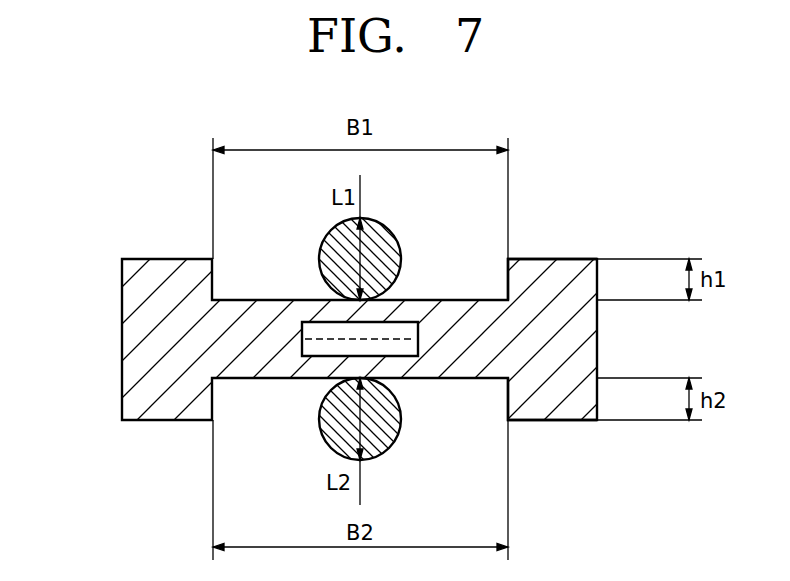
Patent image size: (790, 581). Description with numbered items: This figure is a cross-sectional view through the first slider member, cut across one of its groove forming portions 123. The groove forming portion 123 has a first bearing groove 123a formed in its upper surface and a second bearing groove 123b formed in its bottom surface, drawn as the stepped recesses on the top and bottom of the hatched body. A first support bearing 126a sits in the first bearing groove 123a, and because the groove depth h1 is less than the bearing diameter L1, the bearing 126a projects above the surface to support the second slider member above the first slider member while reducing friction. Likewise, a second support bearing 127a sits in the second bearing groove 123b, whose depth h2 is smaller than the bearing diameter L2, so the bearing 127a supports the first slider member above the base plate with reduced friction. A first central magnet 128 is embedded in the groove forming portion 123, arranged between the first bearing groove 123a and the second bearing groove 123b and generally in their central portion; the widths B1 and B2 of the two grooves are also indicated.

The groove forming portion 123 is at (582, 332).
The first bearing groove 123a is at (508, 275).
The second bearing groove 123b is at (508, 397).
The first support bearing 126a is at (333, 244).
The second support bearing 127a is at (327, 418).
The first central magnet 128 is at (302, 329).